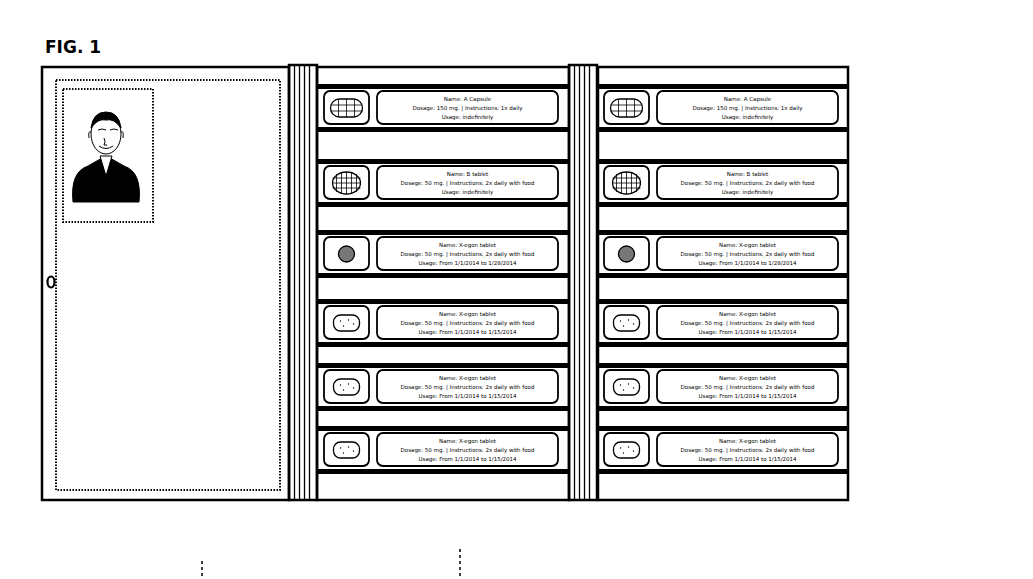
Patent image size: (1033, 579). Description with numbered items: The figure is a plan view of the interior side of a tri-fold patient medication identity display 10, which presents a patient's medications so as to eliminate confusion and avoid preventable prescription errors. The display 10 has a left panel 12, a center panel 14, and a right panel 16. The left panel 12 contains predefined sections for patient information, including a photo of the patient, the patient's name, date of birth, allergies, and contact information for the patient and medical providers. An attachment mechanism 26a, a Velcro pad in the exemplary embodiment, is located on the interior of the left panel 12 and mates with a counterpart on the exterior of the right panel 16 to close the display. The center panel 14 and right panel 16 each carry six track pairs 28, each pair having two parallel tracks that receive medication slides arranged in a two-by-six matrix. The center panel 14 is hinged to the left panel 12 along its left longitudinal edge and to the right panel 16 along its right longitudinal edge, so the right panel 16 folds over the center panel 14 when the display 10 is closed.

The patient medication identity display 10 is at (442, 62).
The left panel 12 is at (167, 506).
The center panel 14 is at (447, 506).
The right panel 16 is at (722, 506).
The attachment mechanism 26a is at (60, 304).
The track pairs 28 is at (512, 482).